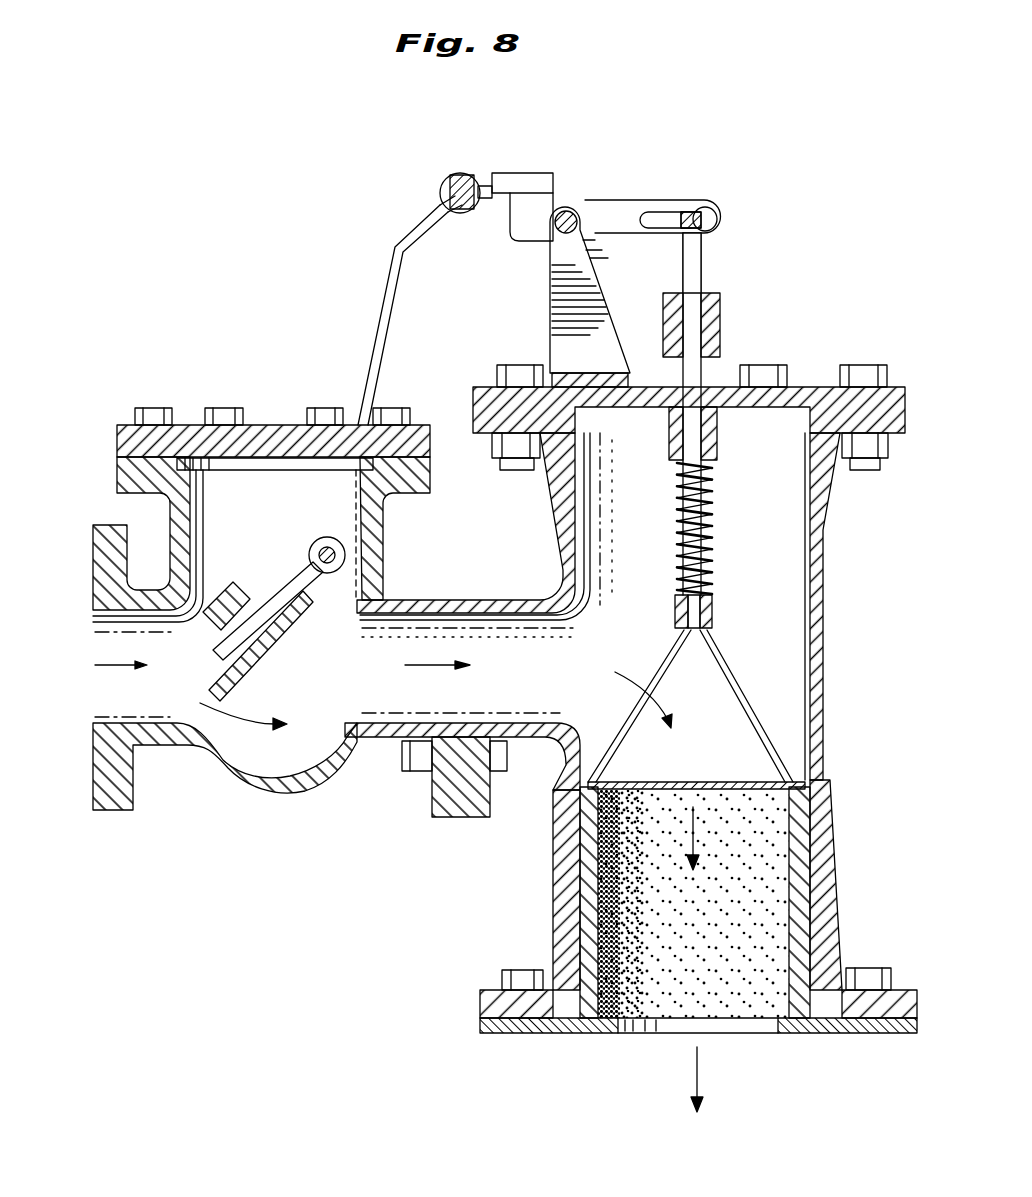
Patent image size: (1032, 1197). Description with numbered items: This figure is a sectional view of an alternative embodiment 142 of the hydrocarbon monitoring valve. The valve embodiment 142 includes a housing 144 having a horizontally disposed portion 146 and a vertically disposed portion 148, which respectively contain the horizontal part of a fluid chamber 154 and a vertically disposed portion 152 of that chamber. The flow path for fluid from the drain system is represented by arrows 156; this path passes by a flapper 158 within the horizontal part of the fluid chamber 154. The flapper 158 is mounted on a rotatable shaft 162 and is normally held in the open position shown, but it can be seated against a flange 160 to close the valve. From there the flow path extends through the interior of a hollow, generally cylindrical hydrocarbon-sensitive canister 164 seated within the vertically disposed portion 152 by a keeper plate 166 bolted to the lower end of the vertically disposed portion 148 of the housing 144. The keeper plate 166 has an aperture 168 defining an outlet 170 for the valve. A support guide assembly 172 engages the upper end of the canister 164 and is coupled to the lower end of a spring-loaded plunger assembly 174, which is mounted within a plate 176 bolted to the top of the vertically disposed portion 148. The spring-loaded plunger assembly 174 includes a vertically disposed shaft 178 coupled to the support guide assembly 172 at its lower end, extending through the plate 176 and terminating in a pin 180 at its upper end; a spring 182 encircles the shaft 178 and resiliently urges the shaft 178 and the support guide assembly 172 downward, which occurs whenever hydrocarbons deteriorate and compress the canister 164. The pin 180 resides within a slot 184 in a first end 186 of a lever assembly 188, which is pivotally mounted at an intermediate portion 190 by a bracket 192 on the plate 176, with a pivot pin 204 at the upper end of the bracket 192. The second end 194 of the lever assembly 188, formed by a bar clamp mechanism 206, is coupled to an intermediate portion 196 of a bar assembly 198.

The alternative embodiment of the hydrocarbon monitoring valve 142 is at (483, 880).
The housing 144 is at (450, 818).
The horizontally disposed portion of the housing 146 is at (216, 775).
The vertically disposed portion of the housing 148 is at (824, 613).
The vertically disposed portion of the fluid chamber 152 is at (793, 748).
The fluid chamber 154 is at (470, 670).
The arrows representing the flow path 156 is at (242, 730).
The flapper 158 is at (290, 620).
The outlet bend 160 is at (334, 770).
The rotatable shaft 162 is at (331, 538).
The hydrocarbon-sensitive canister 164 is at (800, 875).
The keeper plate 166 is at (787, 1035).
The aperture 168 is at (640, 1035).
The outlet 170 is at (727, 1036).
The support guide assembly 172 is at (737, 690).
The spring-loaded plunger assembly 174 is at (713, 523).
The plate 176 is at (801, 387).
The vertically disposed shaft 178 is at (713, 477).
The pin 180 is at (717, 214).
The spring 182 is at (713, 571).
The slot 184 is at (663, 214).
The first end of the lever assembly 186 is at (712, 240).
The lever assembly 188 is at (622, 240).
The intermediate portion of the lever assembly 190 is at (526, 245).
The bracket 192 is at (550, 318).
The second end of the lever assembly 194 is at (490, 200).
The intermediate portion of the bar assembly 196 is at (442, 203).
The bar assembly 198 is at (387, 339).
The pivot pin 204 is at (578, 211).
The bar clamp mechanism 206 is at (469, 170).